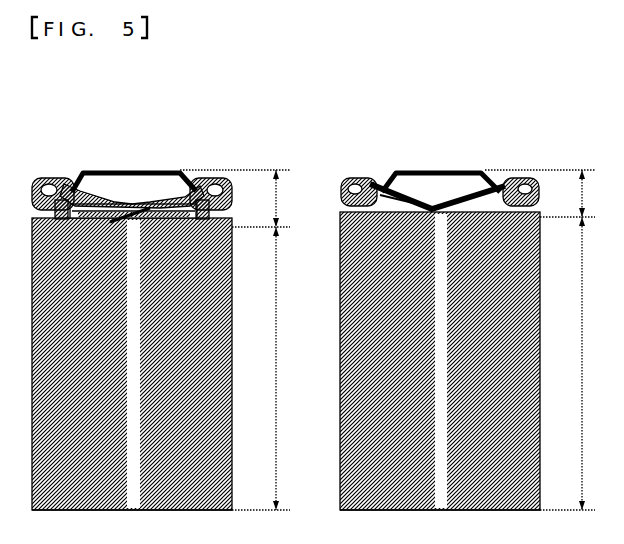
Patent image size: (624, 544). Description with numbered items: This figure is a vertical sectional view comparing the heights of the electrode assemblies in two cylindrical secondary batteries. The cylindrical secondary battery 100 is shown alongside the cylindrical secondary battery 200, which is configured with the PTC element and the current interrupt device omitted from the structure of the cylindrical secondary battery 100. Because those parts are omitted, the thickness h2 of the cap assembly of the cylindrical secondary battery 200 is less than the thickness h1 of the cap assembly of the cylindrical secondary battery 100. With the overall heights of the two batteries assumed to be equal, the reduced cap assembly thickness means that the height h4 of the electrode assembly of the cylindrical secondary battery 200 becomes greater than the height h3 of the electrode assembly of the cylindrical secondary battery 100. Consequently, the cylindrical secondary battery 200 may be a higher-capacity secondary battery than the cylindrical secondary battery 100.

The cylindrical secondary battery 100 is at (103, 153).
The cylindrical secondary battery 200 is at (413, 153).
The thickness of the cap assembly h1 is at (239, 198).
The thickness of the cap assembly h2 is at (545, 193).
The height of the electrode assembly h3 is at (265, 368).
The height of the electrode assembly h4 is at (573, 363).